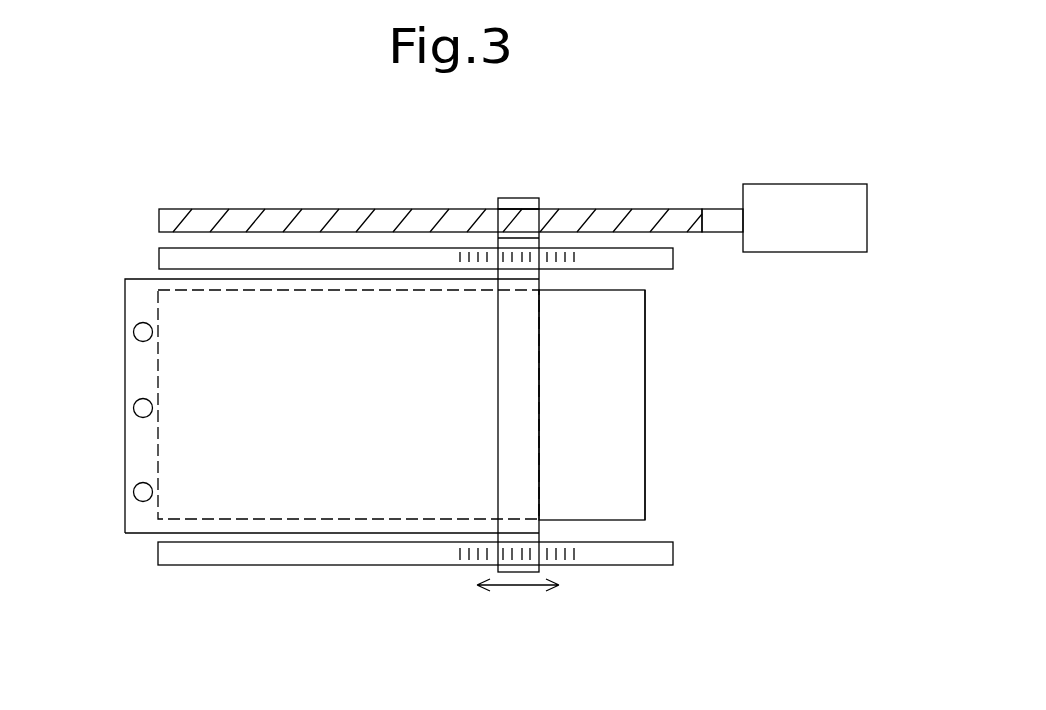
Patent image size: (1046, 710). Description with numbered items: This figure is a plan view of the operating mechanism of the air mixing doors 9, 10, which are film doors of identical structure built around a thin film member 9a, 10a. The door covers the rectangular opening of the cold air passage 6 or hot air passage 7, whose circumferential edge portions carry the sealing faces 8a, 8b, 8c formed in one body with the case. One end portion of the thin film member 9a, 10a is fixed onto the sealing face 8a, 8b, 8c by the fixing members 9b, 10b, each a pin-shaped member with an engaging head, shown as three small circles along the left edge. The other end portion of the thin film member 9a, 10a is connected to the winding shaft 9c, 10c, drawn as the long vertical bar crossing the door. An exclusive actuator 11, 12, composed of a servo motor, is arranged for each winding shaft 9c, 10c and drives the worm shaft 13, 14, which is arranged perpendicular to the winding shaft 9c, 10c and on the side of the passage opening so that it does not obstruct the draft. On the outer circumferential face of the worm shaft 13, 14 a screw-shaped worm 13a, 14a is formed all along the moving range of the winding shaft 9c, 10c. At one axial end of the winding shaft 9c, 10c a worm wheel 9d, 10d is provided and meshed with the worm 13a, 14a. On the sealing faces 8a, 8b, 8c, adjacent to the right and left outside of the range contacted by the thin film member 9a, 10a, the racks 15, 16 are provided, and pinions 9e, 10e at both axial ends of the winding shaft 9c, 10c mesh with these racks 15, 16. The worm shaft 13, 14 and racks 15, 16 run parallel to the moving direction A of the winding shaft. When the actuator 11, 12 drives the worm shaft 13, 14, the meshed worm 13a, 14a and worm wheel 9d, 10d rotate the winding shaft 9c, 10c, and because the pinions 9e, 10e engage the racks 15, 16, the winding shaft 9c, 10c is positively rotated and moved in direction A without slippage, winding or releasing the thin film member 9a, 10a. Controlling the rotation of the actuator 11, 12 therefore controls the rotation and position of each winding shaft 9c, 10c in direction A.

The air mixing door for the cold air 9 is at (332, 337).
The air mixing door for the hot air 10 is at (218, 308).
The thin film member 9a is at (348, 330).
The thin film member 10a is at (291, 328).
The fixing member 9b is at (90, 412).
The fixing member 10b is at (134, 332).
The winding shaft 9c is at (644, 390).
The winding shaft 10c is at (540, 457).
The worm wheel 9d is at (477, 173).
The worm wheel 10d is at (518, 207).
The pinion 9e is at (486, 379).
The pinion 10e is at (527, 257).
The worm 13a is at (430, 168).
The worm 14a is at (383, 230).
The worm shaft 13 is at (706, 184).
The worm shaft 14 is at (718, 220).
The actuator 11 is at (805, 250).
The actuator 12 is at (792, 252).
The rack 15 is at (428, 360).
The rack 16 is at (648, 258).
The cold air passage 6 is at (638, 405).
The hot air passage 7 is at (625, 345).
The sealing face 8a is at (736, 405).
The sealing face 8b is at (736, 405).
The sealing face 8c is at (657, 389).
The direction of movement of the winding shaft A is at (519, 590).